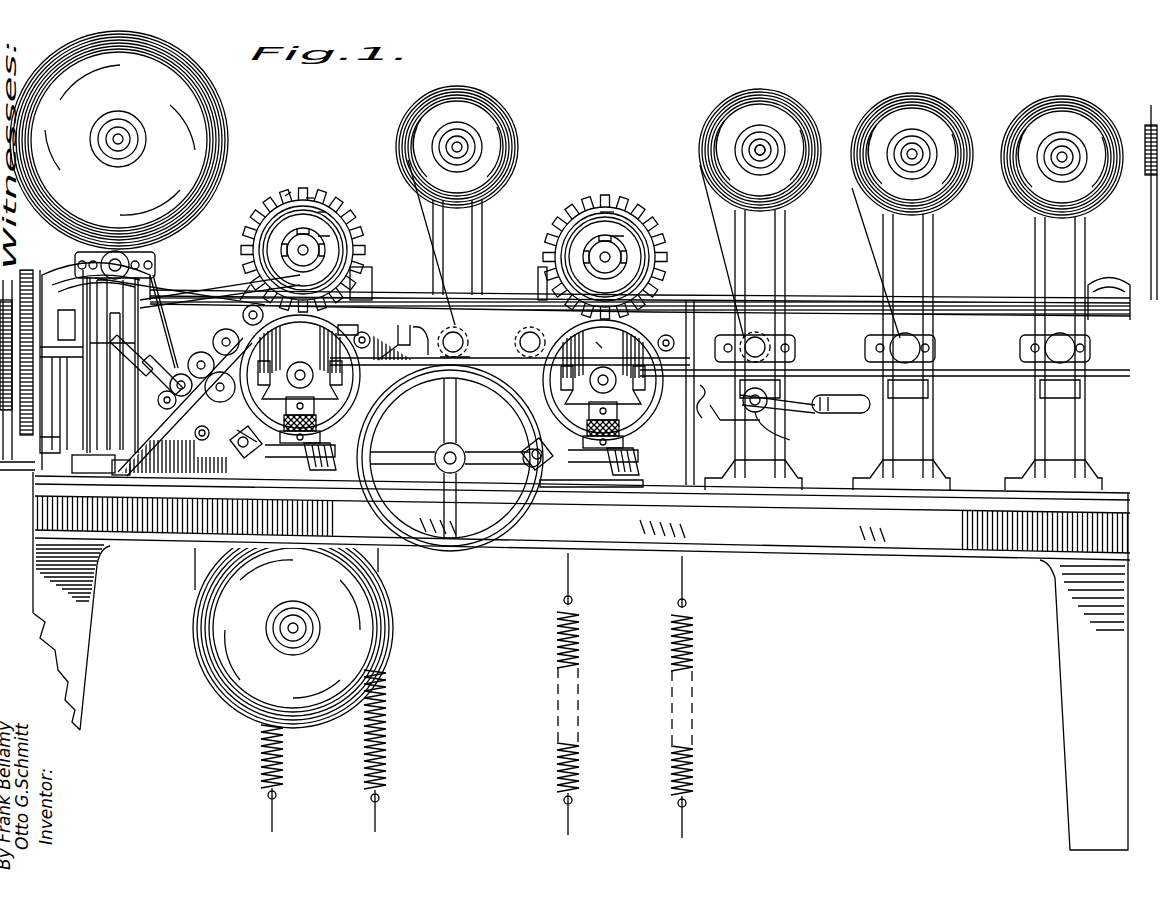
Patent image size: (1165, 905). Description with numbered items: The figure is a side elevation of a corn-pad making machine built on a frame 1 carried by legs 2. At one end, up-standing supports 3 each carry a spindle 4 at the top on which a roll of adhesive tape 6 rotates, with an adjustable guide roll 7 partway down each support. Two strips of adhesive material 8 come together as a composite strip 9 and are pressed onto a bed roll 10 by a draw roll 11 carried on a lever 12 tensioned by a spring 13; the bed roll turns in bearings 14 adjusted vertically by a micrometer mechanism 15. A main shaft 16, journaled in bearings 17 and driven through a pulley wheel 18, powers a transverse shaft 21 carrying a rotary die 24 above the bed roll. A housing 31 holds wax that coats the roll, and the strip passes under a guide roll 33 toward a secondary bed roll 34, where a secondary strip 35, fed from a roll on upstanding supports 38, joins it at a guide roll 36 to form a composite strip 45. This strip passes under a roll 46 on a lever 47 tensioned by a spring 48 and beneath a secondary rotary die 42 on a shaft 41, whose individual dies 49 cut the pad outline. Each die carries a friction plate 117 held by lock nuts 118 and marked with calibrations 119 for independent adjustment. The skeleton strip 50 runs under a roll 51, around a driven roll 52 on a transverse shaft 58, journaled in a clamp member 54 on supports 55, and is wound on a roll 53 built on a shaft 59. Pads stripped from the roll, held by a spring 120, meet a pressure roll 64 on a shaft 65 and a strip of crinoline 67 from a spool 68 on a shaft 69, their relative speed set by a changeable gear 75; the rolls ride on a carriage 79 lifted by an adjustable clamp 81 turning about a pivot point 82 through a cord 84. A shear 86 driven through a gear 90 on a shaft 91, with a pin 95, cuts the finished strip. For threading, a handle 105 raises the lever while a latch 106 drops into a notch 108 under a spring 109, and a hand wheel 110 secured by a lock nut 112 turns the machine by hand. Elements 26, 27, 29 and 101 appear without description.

The frame 1 is at (818, 530).
The legs 2 is at (1068, 684).
The up-standing supports 3 is at (1086, 230).
The spindle 4 is at (768, 156).
The adhesive tape roll 6 is at (1075, 110).
The adjustable guide roll 7 is at (1020, 348).
The strips of adhesive material 8 is at (870, 225).
The composite strip 9 is at (700, 335).
The bed roll 10 is at (600, 345).
The draw roll 11 is at (690, 300).
The lever 12 is at (701, 392).
The tension spring 13 is at (695, 628).
The bearings 14 is at (605, 375).
The micrometer mechanism 15 is at (640, 457).
The shaft 16 is at (975, 296).
The bearings 17 is at (1108, 290).
The pulley wheel 18 is at (1146, 130).
The transverse shaft 21 is at (580, 256).
The rotary die 24 is at (610, 212).
The bracket 26 is at (565, 210).
The arm 27 is at (510, 380).
The spring 29 is at (582, 625).
The housing 31 is at (490, 115).
The guide roll 33 is at (528, 330).
The secondary bed roll 34 is at (349, 320).
The secondary strip of adhesive material 35 is at (646, 249).
The guide roll 36 is at (446, 333).
The upstanding supports 38 is at (483, 228).
The shaft 41 is at (300, 248).
The secondary rotary die 42 is at (322, 212).
The composite strip 45 is at (398, 334).
The roll 46 is at (374, 328).
The lever 47 is at (422, 382).
The spring 48 is at (392, 693).
The individual dies 49 is at (310, 198).
The skeleton strip 50 is at (165, 300).
The roll 51 is at (245, 282).
The driven roll 52 is at (82, 260).
The roll 53 is at (192, 110).
The clamp member 54 is at (138, 258).
The supports 55 is at (146, 364).
The transverse shaft 58 is at (112, 272).
The shaft 59 is at (115, 138).
The pressure roll 64 is at (192, 349).
The shaft 65 is at (201, 368).
The strip of crinoline or gauze 67 is at (195, 562).
The spool 68 is at (370, 618).
The shaft 69 is at (290, 630).
The changeable gear 75 is at (185, 407).
The carriage 79 is at (300, 362).
The adjustable clamp 81 is at (166, 395).
The pivot point 82 is at (194, 428).
The cord 84 is at (220, 335).
The shear 86 is at (101, 465).
The gear 90 is at (21, 352).
The shaft 91 is at (20, 380).
The pin 95 is at (17, 481).
The collar 101 is at (795, 350).
The handle 105 is at (860, 415).
The latch 106 is at (790, 395).
The notch 108 is at (766, 425).
The spring 109 is at (768, 408).
The hand wheel 110 is at (495, 548).
The lock nut 112 is at (495, 428).
The friction plate 117 is at (620, 235).
The lock nuts 118 is at (362, 268).
The calibrations 119 is at (290, 200).
The spring 120 is at (262, 755).